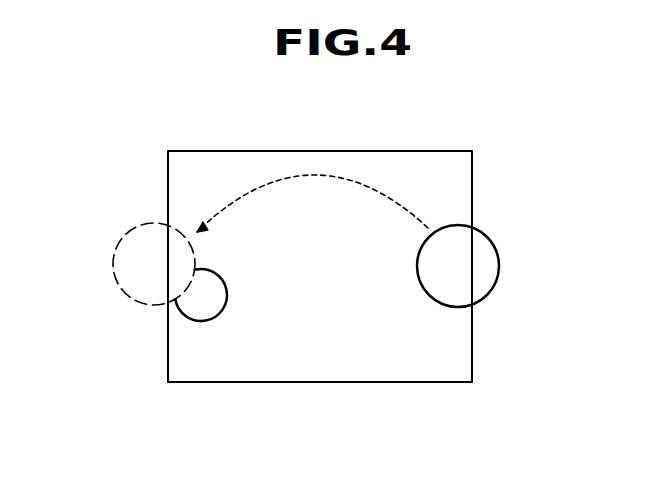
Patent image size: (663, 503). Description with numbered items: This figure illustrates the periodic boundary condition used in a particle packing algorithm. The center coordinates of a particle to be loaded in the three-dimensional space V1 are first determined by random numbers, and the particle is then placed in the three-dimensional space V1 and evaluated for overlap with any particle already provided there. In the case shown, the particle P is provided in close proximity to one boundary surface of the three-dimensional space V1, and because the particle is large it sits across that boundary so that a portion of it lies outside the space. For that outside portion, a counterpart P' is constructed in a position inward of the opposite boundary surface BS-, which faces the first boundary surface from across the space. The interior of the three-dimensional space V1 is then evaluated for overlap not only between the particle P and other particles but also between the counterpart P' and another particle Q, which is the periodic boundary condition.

The three-dimensional space V1 is at (441, 151).
The particle P is at (472, 246).
The counterpart of the particle P' is at (248, 240).
The another particle Q is at (215, 318).
The boundary surface BS- is at (168, 348).